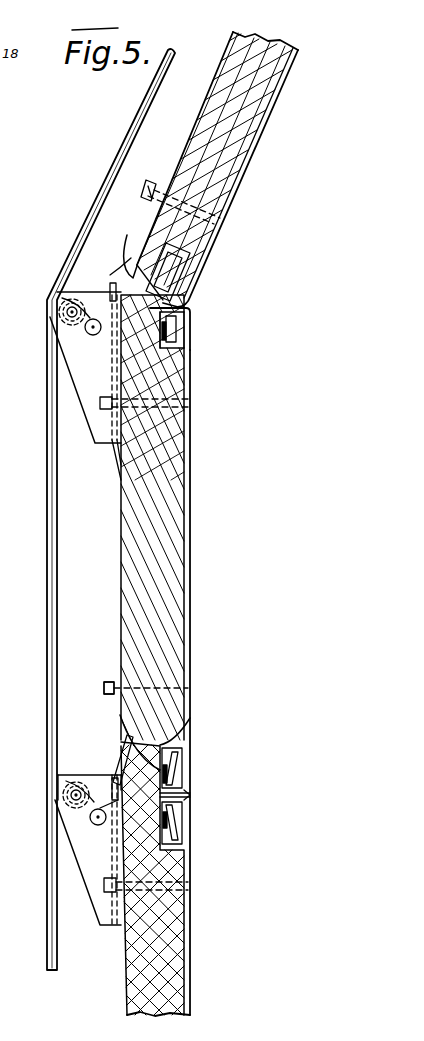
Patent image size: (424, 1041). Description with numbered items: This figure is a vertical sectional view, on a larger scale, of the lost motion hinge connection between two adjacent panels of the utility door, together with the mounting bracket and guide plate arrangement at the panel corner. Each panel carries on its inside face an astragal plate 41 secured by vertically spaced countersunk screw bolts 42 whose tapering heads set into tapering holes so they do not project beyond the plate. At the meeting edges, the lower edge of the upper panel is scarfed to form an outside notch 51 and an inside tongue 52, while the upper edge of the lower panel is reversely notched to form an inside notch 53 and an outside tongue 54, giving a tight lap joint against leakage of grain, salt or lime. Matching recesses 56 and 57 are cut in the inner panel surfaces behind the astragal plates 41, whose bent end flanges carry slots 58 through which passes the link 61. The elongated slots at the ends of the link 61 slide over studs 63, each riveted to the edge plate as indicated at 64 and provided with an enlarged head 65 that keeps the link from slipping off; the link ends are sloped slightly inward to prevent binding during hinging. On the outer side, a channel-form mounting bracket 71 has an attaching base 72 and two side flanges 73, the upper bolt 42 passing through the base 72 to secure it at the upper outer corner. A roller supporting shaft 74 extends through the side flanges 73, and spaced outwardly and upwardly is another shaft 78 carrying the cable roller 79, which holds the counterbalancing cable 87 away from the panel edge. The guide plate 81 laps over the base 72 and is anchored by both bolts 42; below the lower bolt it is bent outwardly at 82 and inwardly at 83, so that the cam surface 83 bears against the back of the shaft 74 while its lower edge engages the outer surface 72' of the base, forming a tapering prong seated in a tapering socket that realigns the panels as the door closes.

The astragal plate 41 is at (263, 124).
The screw bolt 42 is at (220, 218).
The outside notch 51 is at (128, 266).
The inside tongue 52 is at (158, 772).
The inside notch 53 is at (100, 808).
The outside tongue 54 is at (176, 330).
The recess 56 is at (190, 722).
The recess 57 is at (190, 856).
The slot 58 is at (192, 316).
The link 61 is at (194, 305).
The stud 63 is at (182, 748).
The rivet 64 is at (190, 762).
The head 65 is at (125, 688).
The mounting bracket 71 is at (66, 372).
The attaching base 72 is at (170, 680).
The outer surface 72' is at (70, 573).
The side flange 73 is at (85, 834).
The roller supporting shaft 74 is at (93, 336).
The shaft 78 is at (64, 310).
The cable roller 79 is at (66, 320).
The guide plate 81 is at (204, 121).
The outwardly bent portion 82 is at (138, 258).
The inwardly bent portion 83 is at (117, 290).
The counterbalancing cable 87 is at (113, 160).